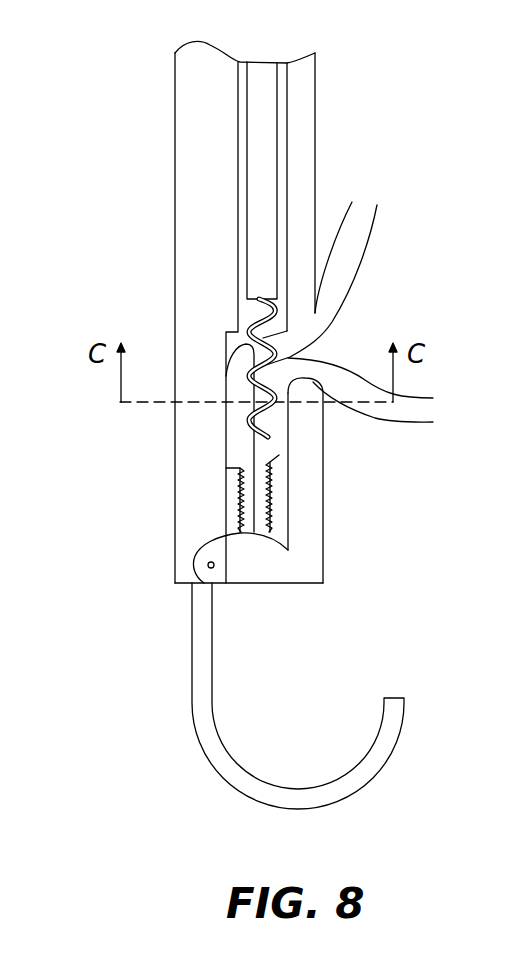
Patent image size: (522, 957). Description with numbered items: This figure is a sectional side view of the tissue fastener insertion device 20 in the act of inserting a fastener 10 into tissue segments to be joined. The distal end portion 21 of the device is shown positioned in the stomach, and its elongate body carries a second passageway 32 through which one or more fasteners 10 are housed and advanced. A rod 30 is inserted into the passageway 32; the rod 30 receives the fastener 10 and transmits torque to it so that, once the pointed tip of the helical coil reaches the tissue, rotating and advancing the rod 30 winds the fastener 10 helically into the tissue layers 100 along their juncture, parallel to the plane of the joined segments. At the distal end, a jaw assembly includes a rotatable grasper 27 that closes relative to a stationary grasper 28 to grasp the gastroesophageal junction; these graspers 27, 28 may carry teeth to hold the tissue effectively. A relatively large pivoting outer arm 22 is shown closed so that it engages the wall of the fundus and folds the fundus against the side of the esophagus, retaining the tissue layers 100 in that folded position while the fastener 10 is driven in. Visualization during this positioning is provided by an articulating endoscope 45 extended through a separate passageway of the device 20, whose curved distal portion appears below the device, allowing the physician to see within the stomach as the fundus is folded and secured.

The tissue fastener insertion device 20 is at (139, 105).
The fastener 10 is at (257, 332).
The tissue layers 100 is at (244, 361).
The rod 30 is at (278, 103).
The second passageway 32 is at (283, 162).
The distal end portion 21 is at (185, 463).
The pivoting outer arm 22 is at (308, 493).
The stationary grasper 28 is at (232, 503).
The rotatable grasper 27 is at (290, 527).
The endoscope 45 is at (388, 732).